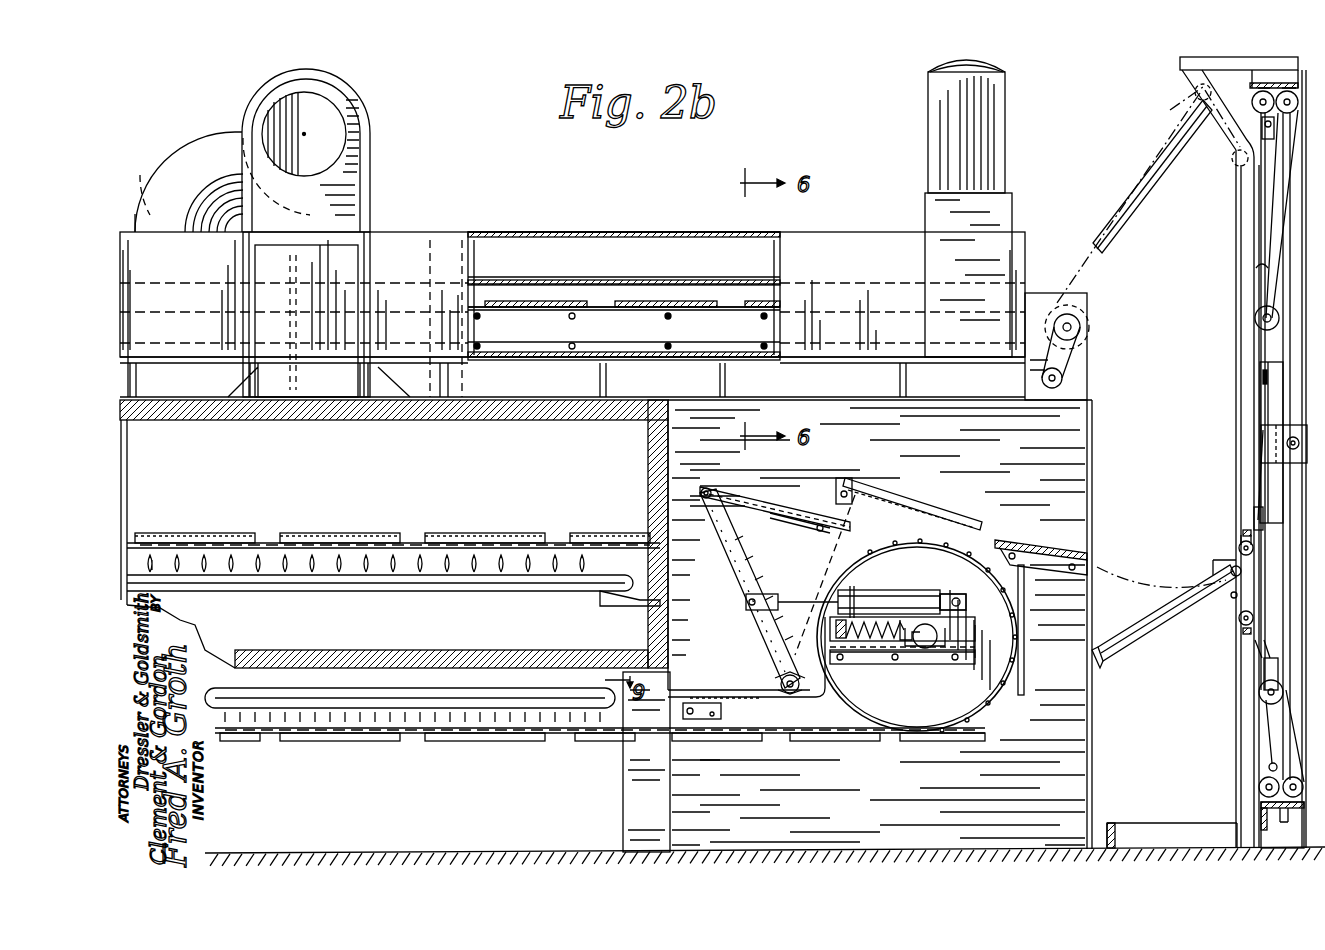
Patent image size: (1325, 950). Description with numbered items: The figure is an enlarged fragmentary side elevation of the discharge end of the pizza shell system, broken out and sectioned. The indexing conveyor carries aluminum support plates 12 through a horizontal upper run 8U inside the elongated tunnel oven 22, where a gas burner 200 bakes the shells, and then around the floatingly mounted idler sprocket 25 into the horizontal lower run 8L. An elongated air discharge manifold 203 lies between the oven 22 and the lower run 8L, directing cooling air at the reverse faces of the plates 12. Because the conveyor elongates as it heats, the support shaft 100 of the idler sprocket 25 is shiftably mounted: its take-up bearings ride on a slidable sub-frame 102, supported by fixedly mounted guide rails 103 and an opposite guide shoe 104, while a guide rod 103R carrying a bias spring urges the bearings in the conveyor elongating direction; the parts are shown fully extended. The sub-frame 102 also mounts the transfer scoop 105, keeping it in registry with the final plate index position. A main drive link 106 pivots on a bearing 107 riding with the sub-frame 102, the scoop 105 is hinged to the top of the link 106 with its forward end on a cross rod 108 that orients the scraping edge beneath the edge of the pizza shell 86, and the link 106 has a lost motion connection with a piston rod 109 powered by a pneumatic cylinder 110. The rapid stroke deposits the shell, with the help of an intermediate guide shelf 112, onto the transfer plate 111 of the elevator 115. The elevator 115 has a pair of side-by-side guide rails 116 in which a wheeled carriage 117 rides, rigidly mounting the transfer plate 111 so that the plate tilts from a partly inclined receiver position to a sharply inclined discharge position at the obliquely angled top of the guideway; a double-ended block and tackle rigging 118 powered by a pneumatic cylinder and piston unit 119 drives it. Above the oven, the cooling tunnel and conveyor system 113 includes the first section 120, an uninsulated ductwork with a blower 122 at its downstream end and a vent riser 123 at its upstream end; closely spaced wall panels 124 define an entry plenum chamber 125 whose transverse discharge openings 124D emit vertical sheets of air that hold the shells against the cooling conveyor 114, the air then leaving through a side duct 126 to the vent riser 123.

The cooling tunnel and conveyor system 113 is at (403, 230).
The blower 122 is at (345, 100).
The first section of cooling tunnel 120 is at (492, 232).
The entry plenum chamber 125 is at (655, 246).
The wall panels 124 is at (500, 283).
The discharge opening 124D is at (560, 281).
The cooling conveyor 114 is at (605, 305).
The pizza shell 86 is at (708, 300).
The vent riser 123 is at (985, 128).
The side duct 126 is at (985, 382).
The tunnel oven 22 is at (368, 482).
The upper run 8U is at (565, 533).
The lower run 8L is at (410, 738).
The burner 200 is at (398, 578).
The air discharge manifold 203 is at (490, 688).
The support plates 12 is at (510, 533).
The transfer scoop 105 is at (752, 492).
The cross rod 108 is at (800, 520).
The main drive link 106 is at (745, 580).
The piston rod 109 is at (785, 602).
The guide shoe 104 is at (860, 635).
The pneumatic cylinder 110 is at (935, 600).
The guide rod 103R is at (860, 640).
The support shaft 100 is at (922, 650).
The guide rails 103 is at (955, 655).
The bearing 107 is at (775, 682).
The sub-frame 102 is at (840, 715).
The idler sprocket 25 is at (985, 708).
The guide shelf 112 is at (1025, 545).
The elevator 115 is at (1188, 58).
The guide rails 116 is at (1242, 412).
The block and tackle rigging 118 is at (1258, 270).
The pneumatic cylinder and piston unit 119 is at (1262, 370).
The wheeled carriage 117 is at (1225, 600).
The transfer plate 111 is at (1138, 200).